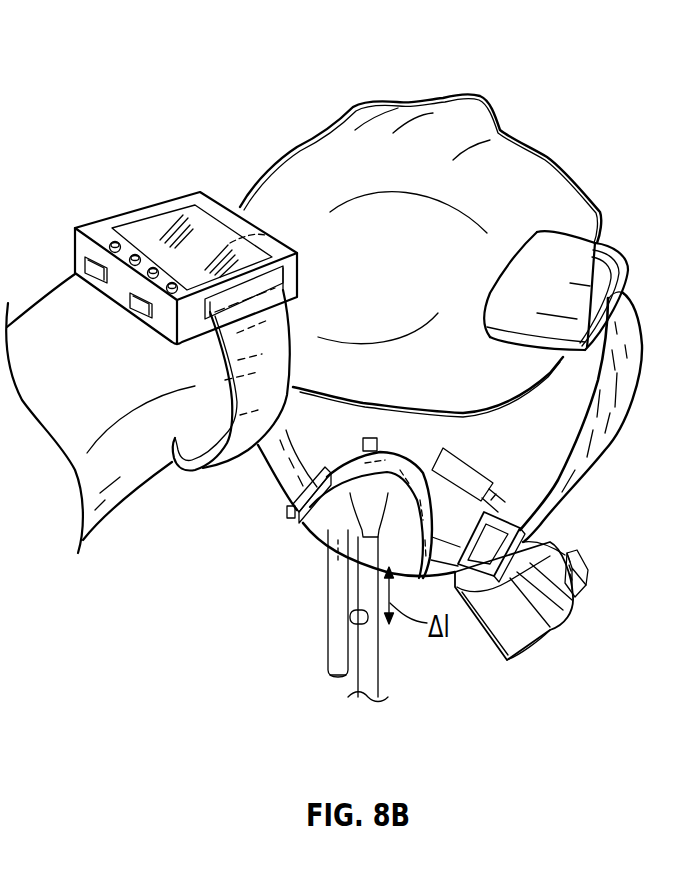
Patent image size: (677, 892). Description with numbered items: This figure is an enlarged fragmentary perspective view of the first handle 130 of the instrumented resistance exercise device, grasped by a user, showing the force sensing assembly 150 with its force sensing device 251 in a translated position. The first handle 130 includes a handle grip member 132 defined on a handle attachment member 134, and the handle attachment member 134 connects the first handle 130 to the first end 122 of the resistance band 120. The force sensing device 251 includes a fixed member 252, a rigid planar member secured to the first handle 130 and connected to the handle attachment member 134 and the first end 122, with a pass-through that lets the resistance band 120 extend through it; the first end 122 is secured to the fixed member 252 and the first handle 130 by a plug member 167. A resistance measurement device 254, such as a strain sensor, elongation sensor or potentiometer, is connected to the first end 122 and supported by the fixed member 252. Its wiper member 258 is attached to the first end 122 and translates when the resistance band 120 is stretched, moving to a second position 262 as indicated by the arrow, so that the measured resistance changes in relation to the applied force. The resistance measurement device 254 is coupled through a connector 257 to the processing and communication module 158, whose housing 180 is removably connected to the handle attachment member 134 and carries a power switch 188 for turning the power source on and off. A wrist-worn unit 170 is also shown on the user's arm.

The first handle 130 is at (591, 106).
The wrist-worn controller unit 170 is at (182, 195).
The handle grip member 132 is at (597, 246).
The handle attachment member 134 is at (593, 443).
The force sensing assembly 150 is at (445, 723).
The first end 122 is at (370, 453).
The plug member 167 is at (358, 490).
The connector 257 is at (466, 480).
The processing and communication module 158 is at (582, 639).
The housing 180 is at (507, 658).
The power switch 188 is at (575, 572).
The fixed member 252 is at (340, 530).
The wiper member 258 is at (350, 617).
The resistance measurement device 254 is at (330, 662).
The second position 262 is at (322, 637).
The force sensing device 251 is at (327, 693).
The resistance band 120 is at (373, 660).